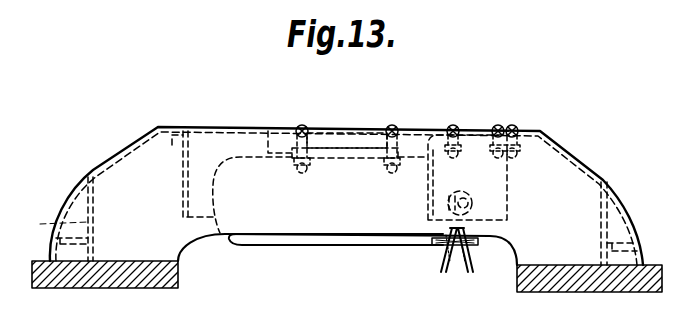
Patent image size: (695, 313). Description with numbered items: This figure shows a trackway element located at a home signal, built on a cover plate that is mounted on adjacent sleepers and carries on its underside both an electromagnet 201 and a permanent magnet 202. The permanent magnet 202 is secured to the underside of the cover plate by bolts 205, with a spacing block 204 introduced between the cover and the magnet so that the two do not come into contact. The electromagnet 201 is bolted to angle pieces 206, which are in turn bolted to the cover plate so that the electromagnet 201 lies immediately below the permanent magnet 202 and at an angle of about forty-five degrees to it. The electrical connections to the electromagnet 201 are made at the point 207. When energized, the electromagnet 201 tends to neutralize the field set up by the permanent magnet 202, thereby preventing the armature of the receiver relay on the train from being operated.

The electromagnet 201 is at (373, 229).
The permanent magnet 202 is at (352, 160).
The spacing block 204 is at (351, 141).
The bolts 205 is at (300, 126).
The angle pieces 206 is at (188, 201).
The point of electrical connections 207 is at (446, 246).